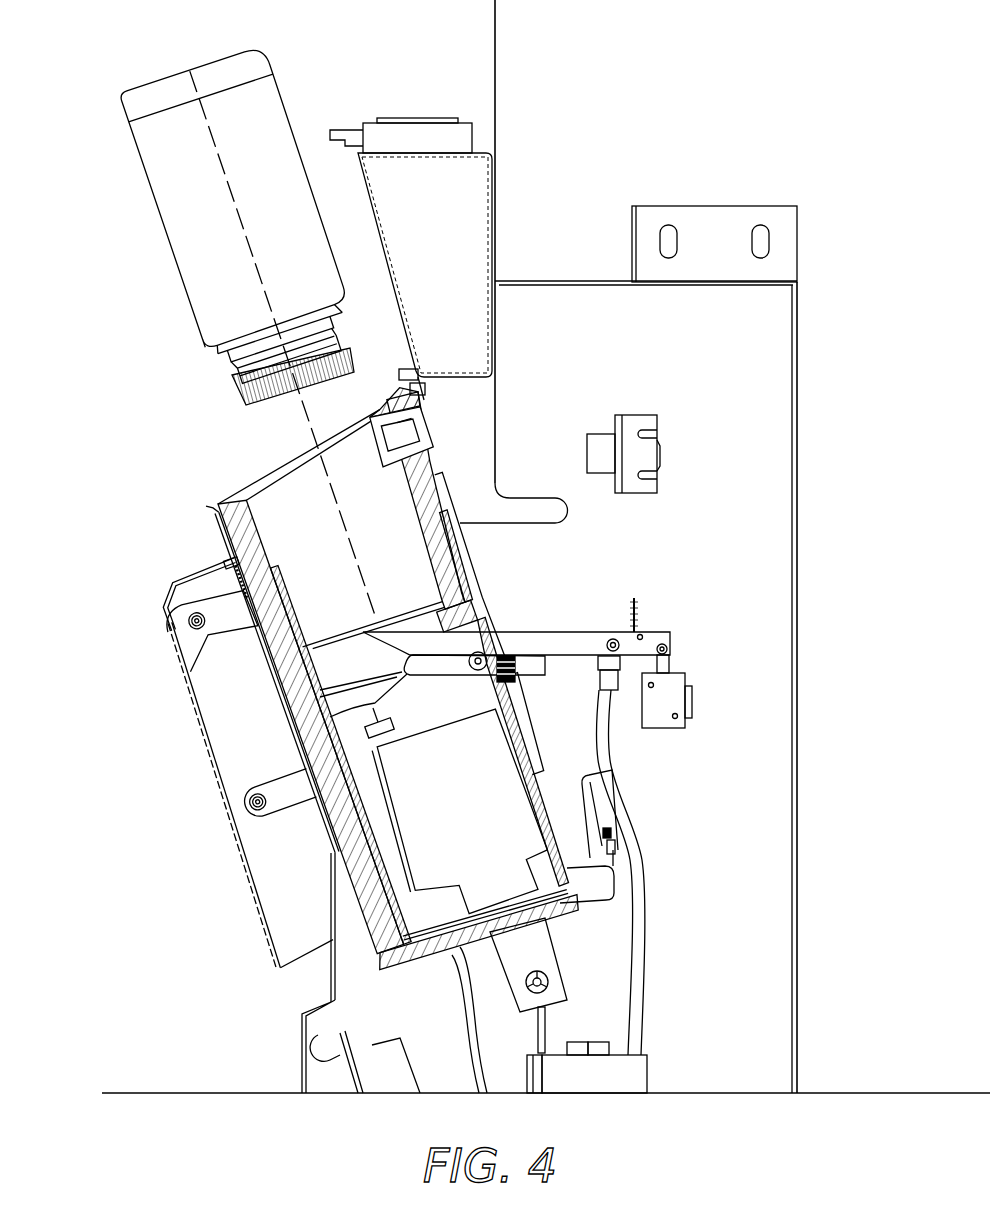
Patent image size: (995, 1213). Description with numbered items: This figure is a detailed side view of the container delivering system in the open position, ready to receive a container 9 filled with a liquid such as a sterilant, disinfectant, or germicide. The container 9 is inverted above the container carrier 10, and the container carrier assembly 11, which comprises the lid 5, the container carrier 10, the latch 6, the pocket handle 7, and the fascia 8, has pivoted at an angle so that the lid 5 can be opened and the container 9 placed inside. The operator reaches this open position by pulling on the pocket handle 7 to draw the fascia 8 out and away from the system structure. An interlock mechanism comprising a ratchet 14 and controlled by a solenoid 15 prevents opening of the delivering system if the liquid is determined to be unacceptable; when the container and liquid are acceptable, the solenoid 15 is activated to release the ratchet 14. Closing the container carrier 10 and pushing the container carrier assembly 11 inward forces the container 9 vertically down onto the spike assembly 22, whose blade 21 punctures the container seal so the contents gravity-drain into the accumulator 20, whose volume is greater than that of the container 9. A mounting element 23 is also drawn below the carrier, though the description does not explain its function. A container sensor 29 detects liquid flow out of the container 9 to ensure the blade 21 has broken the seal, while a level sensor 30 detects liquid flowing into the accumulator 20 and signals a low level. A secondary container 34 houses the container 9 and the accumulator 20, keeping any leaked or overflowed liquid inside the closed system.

The lid 5 is at (467, 197).
The latch 6 is at (418, 133).
The pocket handle 7 is at (180, 660).
The fascia 8 is at (172, 583).
The container 9 is at (186, 212).
The container carrier 10 is at (240, 503).
The container carrier assembly 11 is at (162, 866).
The ratchet 14 is at (650, 635).
The solenoid 15 is at (662, 700).
The accumulator 20 is at (613, 881).
The blade 21 is at (312, 718).
The spike assembly 22 is at (438, 813).
The mounting plate 23 is at (560, 982).
The container sensor 29 is at (604, 452).
The level sensor 30 is at (600, 810).
The secondary container 34 is at (797, 485).